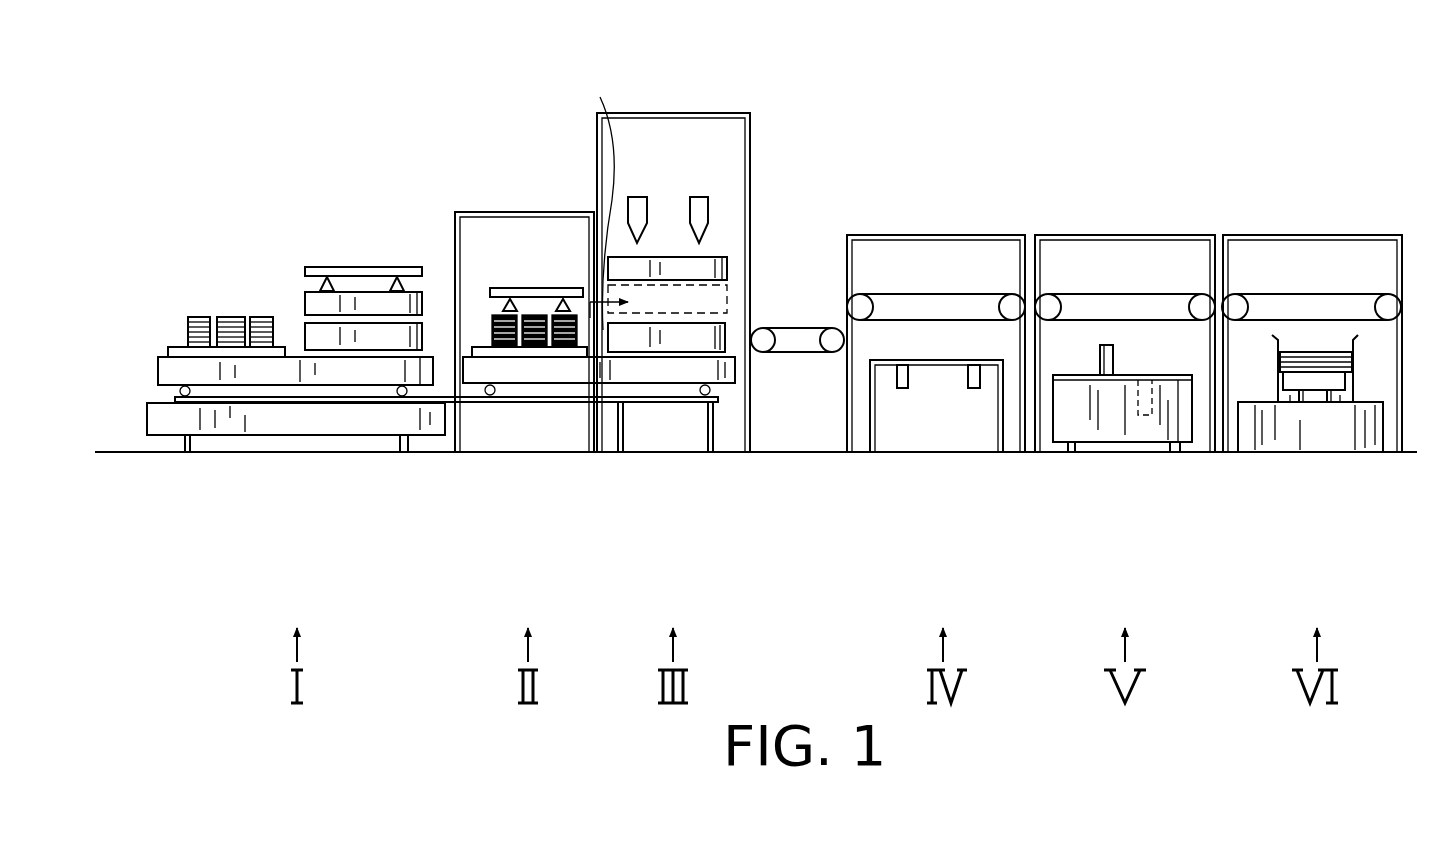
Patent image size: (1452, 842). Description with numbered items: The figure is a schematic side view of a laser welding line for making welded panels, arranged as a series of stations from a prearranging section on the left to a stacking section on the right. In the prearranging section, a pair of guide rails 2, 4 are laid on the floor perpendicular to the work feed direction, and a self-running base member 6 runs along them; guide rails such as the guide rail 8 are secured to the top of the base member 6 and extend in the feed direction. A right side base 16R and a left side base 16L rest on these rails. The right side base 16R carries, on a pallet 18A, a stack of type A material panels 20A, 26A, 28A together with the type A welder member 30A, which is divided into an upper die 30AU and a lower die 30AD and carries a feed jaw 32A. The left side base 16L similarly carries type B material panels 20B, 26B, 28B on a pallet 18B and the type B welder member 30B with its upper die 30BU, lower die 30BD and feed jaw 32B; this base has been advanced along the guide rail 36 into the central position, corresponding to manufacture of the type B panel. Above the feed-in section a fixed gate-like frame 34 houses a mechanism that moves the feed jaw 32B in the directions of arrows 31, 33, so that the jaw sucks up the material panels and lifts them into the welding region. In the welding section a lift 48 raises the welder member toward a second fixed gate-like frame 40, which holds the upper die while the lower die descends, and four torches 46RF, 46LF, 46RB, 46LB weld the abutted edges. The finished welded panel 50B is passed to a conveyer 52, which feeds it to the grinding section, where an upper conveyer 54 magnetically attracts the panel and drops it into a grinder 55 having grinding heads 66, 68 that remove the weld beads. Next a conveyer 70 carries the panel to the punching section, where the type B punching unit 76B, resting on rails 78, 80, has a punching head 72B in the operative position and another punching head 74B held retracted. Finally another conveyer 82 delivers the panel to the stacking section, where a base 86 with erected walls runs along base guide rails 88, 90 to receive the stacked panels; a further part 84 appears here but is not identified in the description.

The guide rail 2 is at (190, 445).
The guide rail 4 is at (400, 447).
The self-running base member 6 is at (152, 417).
The guide rail 8 is at (177, 402).
The right side base 16R is at (167, 370).
The left side base 16L is at (718, 375).
The pallet 18A is at (177, 347).
The pallet 18B is at (475, 358).
The material panel 20A is at (260, 315).
The material panel 20B is at (567, 347).
The material panel 26A is at (232, 315).
The material panel 26B is at (528, 347).
The material panel 28A is at (195, 315).
The material panel 28B is at (510, 347).
The welder member 30A is at (389, 245).
The upper die 30AU is at (313, 298).
The lower die 30AD is at (307, 335).
The welder member 30B is at (784, 237).
The upper die 30BU is at (727, 262).
The lower die 30BD is at (723, 330).
The arrow 31 is at (590, 320).
The feed jaw 32A is at (365, 265).
The feed jaw 32B is at (530, 287).
The arrow 33 is at (600, 196).
The gate-like frame 34 is at (500, 212).
The guide rail 36 is at (645, 402).
The gate-like frame 40 is at (678, 113).
The torch 46RF is at (640, 212).
The torch 46LF is at (713, 138).
The torch 46RB is at (703, 207).
The torch 46LB is at (839, 159).
The lift 48 is at (680, 433).
The welded panel 50B is at (1317, 353).
The conveyer 52 is at (800, 358).
The upper conveyer 54 is at (915, 292).
The grinder 55 is at (868, 422).
The grinding head 66 is at (968, 388).
The grinding head 68 is at (898, 388).
The conveyer 70 is at (1115, 292).
The punching head 72B is at (1102, 357).
The punching head 74B is at (1148, 415).
The punching unit 76B is at (1052, 405).
The rail 78 is at (1175, 446).
The rail 80 is at (1068, 446).
The conveyer 82 is at (1268, 293).
The guide 84 is at (1357, 345).
The base 86 is at (1313, 383).
The base guide rail 88 is at (1290, 398).
The base guide rail 90 is at (1350, 400).